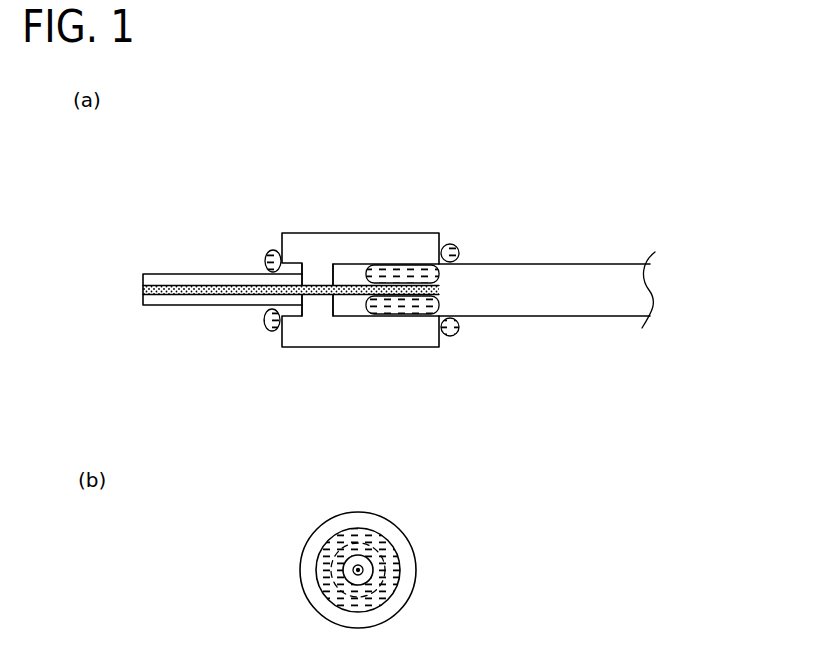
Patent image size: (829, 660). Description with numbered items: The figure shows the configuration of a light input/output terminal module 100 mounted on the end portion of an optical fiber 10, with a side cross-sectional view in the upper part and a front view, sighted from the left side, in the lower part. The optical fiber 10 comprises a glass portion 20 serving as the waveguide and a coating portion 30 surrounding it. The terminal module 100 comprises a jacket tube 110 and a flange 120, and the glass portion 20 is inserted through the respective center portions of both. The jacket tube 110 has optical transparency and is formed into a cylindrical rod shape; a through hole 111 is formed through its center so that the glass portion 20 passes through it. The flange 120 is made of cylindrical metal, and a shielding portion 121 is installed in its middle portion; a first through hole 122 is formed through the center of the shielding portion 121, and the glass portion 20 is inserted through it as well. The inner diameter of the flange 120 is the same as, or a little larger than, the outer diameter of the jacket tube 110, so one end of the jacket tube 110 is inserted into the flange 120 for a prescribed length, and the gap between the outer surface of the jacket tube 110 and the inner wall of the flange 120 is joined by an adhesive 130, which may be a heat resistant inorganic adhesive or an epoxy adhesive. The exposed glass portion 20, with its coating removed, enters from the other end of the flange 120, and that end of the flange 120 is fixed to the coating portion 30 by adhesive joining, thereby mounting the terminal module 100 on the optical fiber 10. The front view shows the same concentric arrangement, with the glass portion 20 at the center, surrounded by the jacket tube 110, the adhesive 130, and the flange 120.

The light input/output terminal module 100 is at (386, 195).
The optical fiber 10 is at (547, 252).
The glass portion 20 is at (202, 287).
The coating portion 30 is at (606, 275).
The jacket tube 110 is at (182, 273).
The through hole 111 is at (238, 287).
The flange 120 is at (350, 233).
The shielding portion 121 is at (352, 266).
The first through hole 122 is at (352, 298).
The adhesive 130 is at (264, 328).